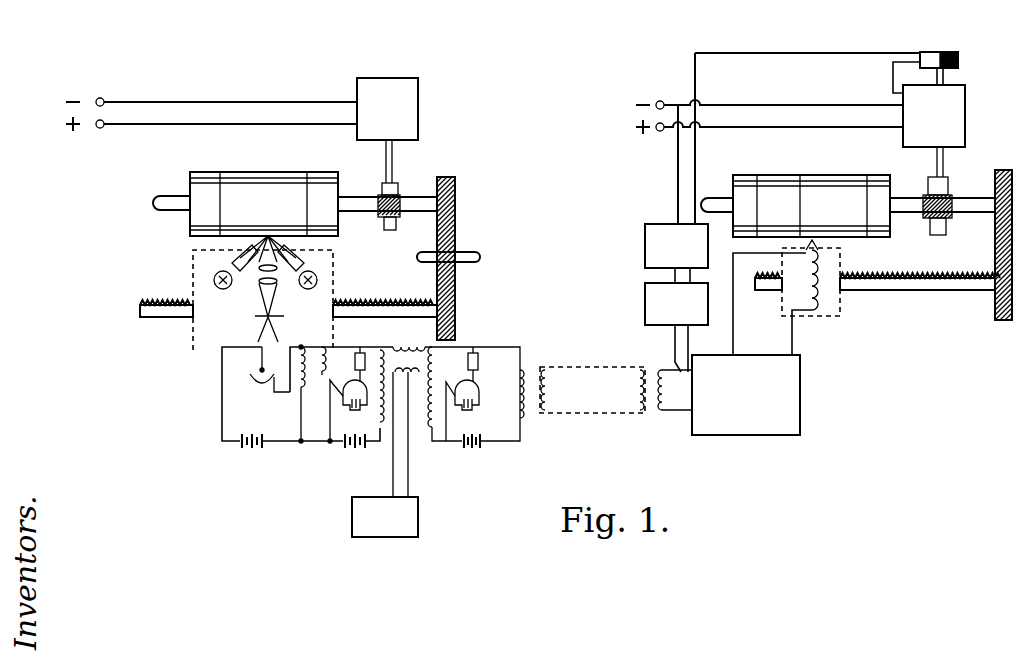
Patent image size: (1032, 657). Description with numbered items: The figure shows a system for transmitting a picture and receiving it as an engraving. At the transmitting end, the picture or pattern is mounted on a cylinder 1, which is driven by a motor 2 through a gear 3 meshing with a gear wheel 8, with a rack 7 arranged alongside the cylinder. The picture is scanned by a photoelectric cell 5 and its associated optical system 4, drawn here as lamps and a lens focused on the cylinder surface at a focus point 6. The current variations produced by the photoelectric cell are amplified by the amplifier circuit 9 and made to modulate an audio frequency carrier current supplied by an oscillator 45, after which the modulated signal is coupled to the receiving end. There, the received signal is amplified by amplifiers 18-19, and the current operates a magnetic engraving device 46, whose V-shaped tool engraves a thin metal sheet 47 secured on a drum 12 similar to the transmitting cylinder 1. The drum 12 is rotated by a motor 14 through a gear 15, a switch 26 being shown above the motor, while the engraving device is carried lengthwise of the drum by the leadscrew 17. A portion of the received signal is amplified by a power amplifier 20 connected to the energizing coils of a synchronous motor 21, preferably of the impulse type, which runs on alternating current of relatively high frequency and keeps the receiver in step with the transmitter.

The cylinder 1 is at (213, 172).
The motor 2 is at (418, 108).
The gear 3 is at (396, 185).
The optical system 4 is at (259, 282).
The photoelectric cell 5 is at (252, 385).
The light beam focus 6 is at (262, 316).
The rack 7 is at (382, 300).
The gear wheel 8 is at (458, 222).
The amplifier circuit 9 is at (470, 347).
The oscillator 45 is at (418, 513).
The cylinder 12 is at (760, 175).
The motor 14 is at (965, 122).
The gear 15 is at (946, 230).
The leadscrew 17 is at (885, 290).
The amplifiers 18-19 is at (800, 378).
The power amplifier 20 is at (652, 299).
The synchronous motor 21 is at (648, 242).
The switch 26 is at (958, 56).
The magnetic engraving device 46 is at (822, 292).
The thin metal sheet 47 is at (835, 175).